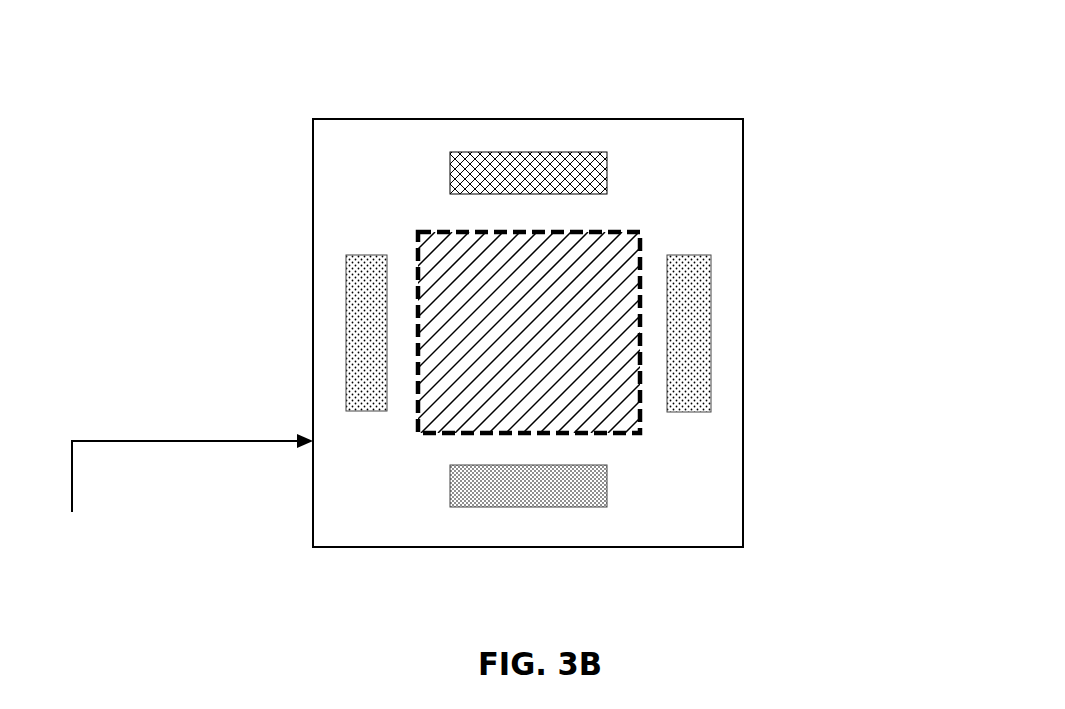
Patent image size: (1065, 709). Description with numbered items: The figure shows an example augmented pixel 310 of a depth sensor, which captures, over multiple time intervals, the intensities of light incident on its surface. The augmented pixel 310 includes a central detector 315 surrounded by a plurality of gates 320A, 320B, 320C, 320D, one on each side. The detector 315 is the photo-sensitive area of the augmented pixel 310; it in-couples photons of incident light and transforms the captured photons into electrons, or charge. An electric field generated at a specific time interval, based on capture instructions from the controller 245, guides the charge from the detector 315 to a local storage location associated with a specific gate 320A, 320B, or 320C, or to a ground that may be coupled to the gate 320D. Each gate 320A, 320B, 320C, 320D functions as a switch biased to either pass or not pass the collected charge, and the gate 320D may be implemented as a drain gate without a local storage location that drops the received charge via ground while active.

The augmented pixel 310 is at (350, 118).
The detector 315 is at (640, 247).
The gate 320A is at (521, 167).
The gate 320B is at (360, 308).
The gate 320C is at (690, 314).
The gate 320D is at (564, 493).
The controller 245 is at (94, 571).